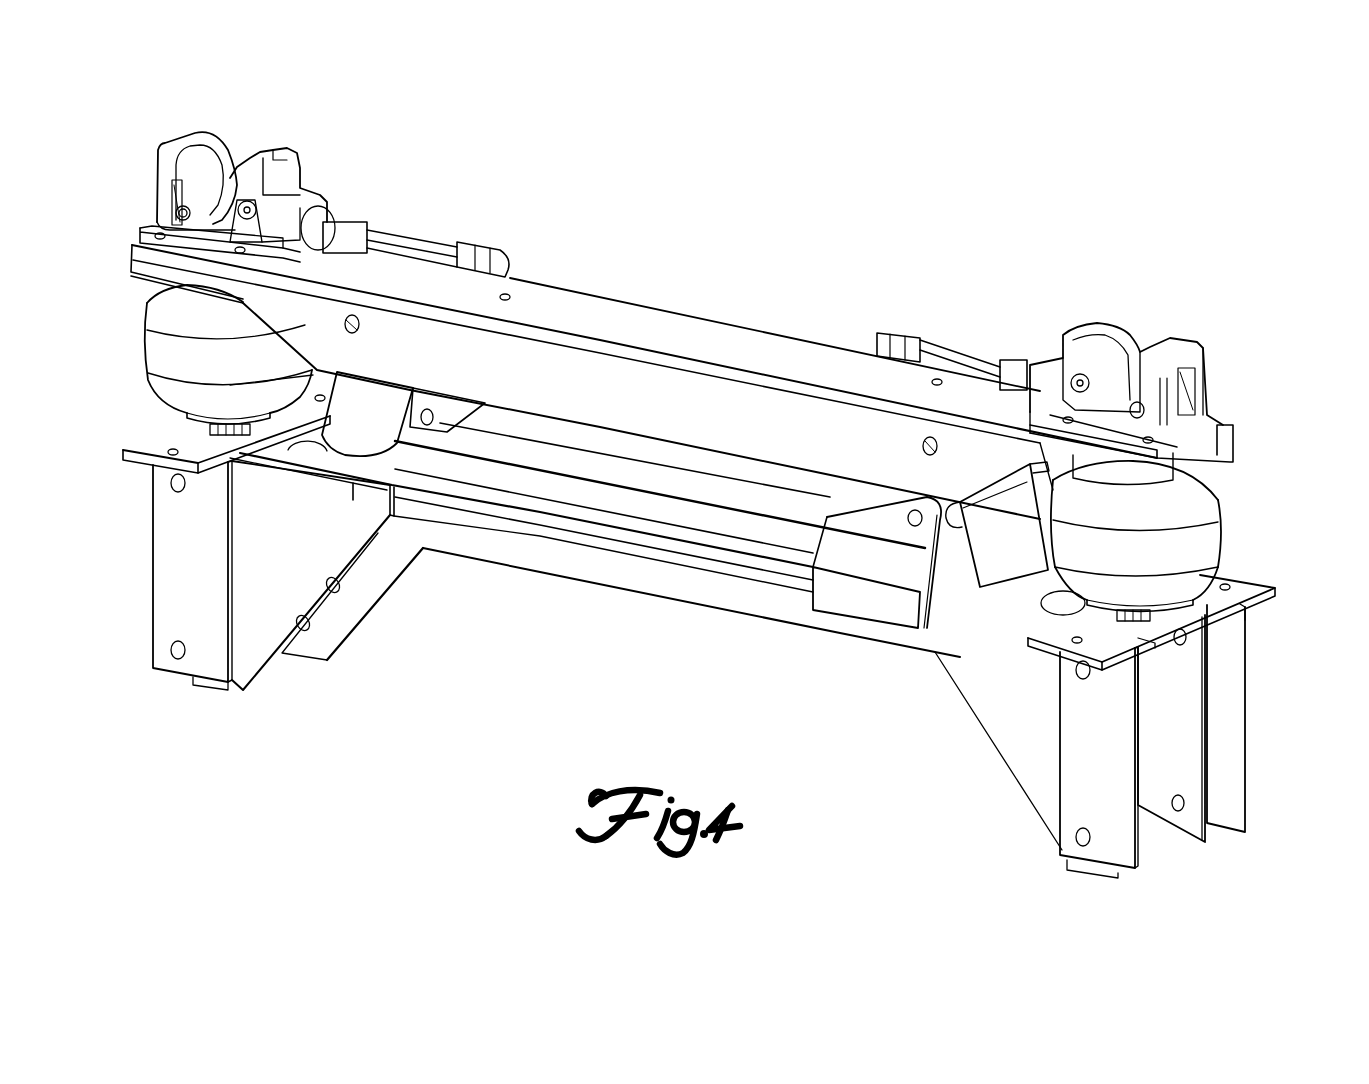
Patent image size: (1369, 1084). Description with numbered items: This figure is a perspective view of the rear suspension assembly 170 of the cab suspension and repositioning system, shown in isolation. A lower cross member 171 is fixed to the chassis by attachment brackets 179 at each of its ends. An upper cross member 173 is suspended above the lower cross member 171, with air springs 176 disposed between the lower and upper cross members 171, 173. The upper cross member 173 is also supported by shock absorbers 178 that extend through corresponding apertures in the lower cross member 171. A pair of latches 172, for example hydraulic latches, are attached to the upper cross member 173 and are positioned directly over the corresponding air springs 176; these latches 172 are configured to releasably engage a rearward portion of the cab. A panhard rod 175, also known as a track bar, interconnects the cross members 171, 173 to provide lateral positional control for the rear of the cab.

The rear suspension assembly 170 is at (762, 224).
The lower cross member 171 is at (643, 588).
The latches 172 is at (316, 156).
The upper cross member 173 is at (768, 334).
The panhard rod 175 is at (750, 478).
The air springs 176 is at (148, 345).
The shock absorbers 178 is at (355, 458).
The attachment brackets 179 is at (148, 563).